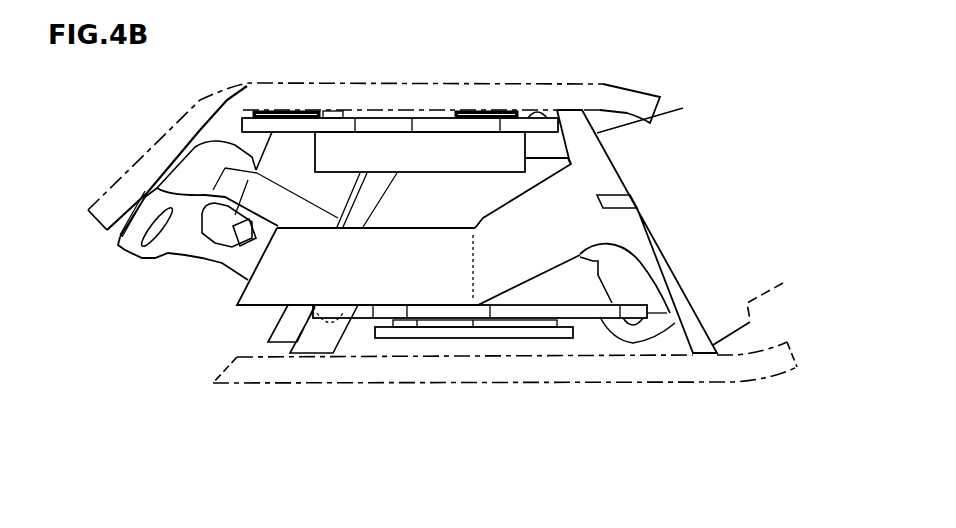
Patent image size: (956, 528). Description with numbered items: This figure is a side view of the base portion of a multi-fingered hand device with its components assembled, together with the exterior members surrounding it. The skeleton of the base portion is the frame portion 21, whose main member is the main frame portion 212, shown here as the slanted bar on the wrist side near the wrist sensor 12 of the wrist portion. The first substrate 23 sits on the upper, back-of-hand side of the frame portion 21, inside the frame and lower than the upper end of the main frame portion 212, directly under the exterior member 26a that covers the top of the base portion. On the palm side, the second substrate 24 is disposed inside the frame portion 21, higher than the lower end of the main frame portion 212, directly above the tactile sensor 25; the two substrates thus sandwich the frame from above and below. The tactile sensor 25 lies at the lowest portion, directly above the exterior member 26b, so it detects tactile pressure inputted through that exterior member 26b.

The frame portion 21 is at (185, 288).
The first substrate 23 is at (244, 125).
The second substrate 24 is at (668, 322).
The tactile sensor 25 is at (530, 338).
The wrist sensor 12 is at (660, 113).
The main frame portion 212 is at (618, 180).
The exterior member 26a is at (605, 84).
The exterior member 26b is at (733, 383).